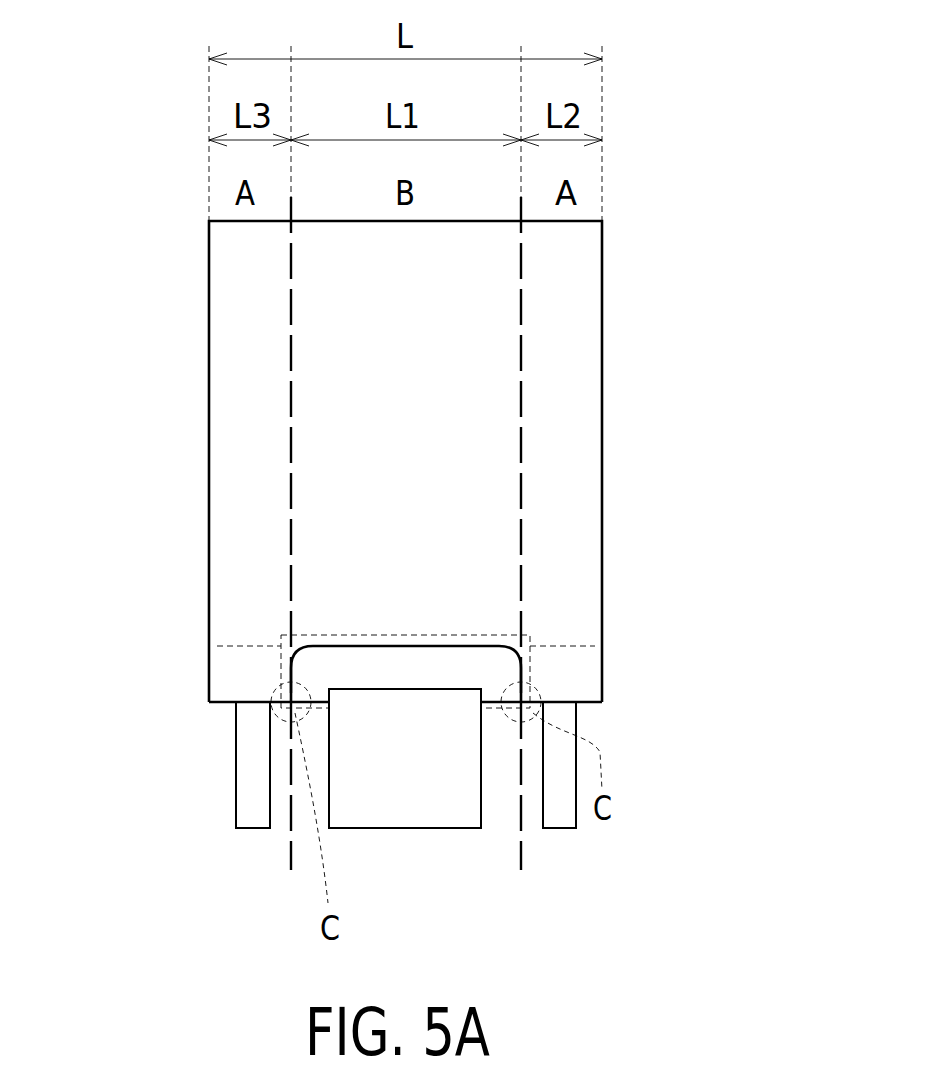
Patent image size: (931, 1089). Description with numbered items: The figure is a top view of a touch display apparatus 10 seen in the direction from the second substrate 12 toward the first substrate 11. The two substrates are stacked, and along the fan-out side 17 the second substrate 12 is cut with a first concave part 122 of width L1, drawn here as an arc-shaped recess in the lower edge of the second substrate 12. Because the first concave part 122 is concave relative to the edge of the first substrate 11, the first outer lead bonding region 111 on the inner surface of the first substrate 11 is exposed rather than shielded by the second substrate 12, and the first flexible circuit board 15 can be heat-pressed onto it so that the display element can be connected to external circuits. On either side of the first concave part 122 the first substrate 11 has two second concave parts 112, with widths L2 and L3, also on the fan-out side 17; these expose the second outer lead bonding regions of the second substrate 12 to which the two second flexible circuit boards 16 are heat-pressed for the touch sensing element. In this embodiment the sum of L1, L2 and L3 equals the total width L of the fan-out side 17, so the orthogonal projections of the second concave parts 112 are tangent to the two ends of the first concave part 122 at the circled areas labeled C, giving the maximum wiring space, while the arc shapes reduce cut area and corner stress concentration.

The touch display apparatus 10 is at (409, 557).
The first substrate 11 is at (494, 690).
The second substrate 12 is at (577, 317).
The first flexible circuit board 15 is at (445, 805).
The second flexible circuit boards 16 is at (252, 805).
The fan-out side 17 is at (607, 712).
The first outer lead bonding region 111 is at (535, 668).
The second concave parts 112 is at (250, 670).
The first concave part 122 is at (324, 648).